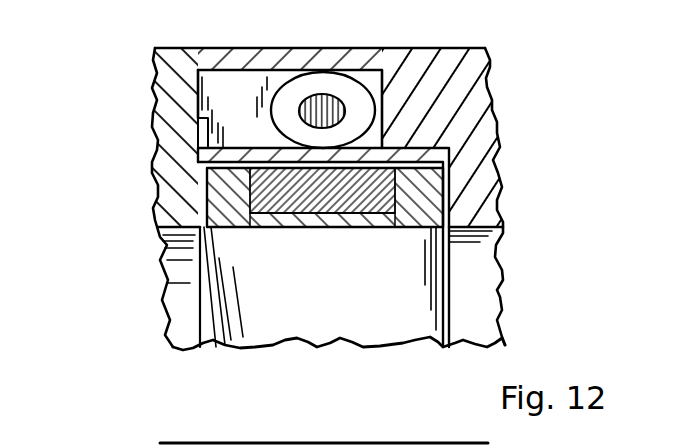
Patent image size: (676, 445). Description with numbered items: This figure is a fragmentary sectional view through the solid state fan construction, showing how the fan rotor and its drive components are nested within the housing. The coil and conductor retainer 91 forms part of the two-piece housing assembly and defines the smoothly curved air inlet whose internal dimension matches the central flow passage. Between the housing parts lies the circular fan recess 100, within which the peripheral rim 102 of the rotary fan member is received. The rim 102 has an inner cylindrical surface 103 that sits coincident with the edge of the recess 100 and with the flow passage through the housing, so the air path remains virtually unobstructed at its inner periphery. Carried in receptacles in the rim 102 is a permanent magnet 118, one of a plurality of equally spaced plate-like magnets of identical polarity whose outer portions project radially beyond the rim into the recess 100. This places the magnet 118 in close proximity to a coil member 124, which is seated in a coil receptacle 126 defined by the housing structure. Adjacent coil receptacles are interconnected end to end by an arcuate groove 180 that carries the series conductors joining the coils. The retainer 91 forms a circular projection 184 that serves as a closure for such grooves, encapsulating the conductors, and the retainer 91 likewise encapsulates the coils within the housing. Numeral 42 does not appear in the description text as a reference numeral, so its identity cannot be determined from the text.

The base member 42 is at (425, 343).
The coil and conductor retainer 91 is at (173, 48).
The fan recess 100 is at (403, 170).
The peripheral rim 102 is at (400, 227).
The inner cylindrical surface 103 is at (228, 220).
The permanent magnet 118 is at (380, 160).
The coil member 124 is at (358, 102).
The coil receptacle 126 is at (365, 82).
The arcuate groove 180 is at (224, 443).
The circular projection 184 is at (200, 128).